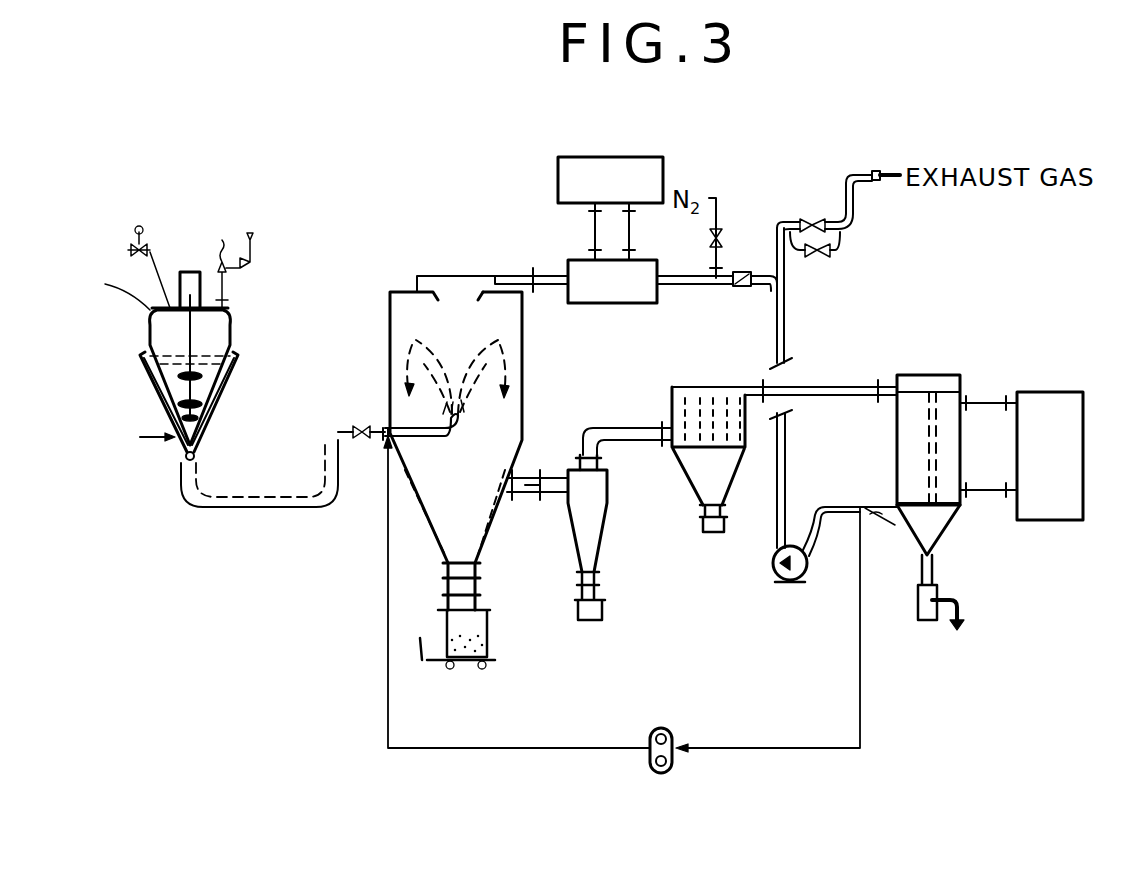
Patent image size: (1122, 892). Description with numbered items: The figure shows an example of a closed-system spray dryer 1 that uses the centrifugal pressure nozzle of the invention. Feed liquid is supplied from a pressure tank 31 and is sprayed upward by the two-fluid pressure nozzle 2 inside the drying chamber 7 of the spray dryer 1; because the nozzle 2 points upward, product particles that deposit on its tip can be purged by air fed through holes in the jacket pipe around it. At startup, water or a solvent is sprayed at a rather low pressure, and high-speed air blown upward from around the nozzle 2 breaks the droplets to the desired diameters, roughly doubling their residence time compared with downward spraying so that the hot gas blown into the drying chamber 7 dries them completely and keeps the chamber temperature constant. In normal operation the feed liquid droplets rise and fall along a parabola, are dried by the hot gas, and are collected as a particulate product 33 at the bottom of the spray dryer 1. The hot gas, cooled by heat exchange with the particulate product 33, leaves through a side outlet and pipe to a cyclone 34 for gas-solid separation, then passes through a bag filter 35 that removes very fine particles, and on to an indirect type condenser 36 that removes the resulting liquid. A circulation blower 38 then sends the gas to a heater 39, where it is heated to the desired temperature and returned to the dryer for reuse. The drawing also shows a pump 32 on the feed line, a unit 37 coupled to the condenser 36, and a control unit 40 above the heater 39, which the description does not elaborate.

The spray dryer 1 is at (387, 388).
The two-fluid pressure nozzle 2 is at (458, 420).
The drying chamber 7 is at (514, 357).
The pressure tank 31 is at (235, 331).
The feed pump 32 is at (658, 728).
The particulate product 33 is at (490, 645).
The cyclone 34 is at (590, 620).
The bag filter 35 is at (712, 532).
The indirect type condenser 36 is at (945, 375).
The cooling unit 37 is at (1058, 392).
The circulation blower 38 is at (792, 584).
The heater 39 is at (643, 303).
The heater control unit 40 is at (645, 157).